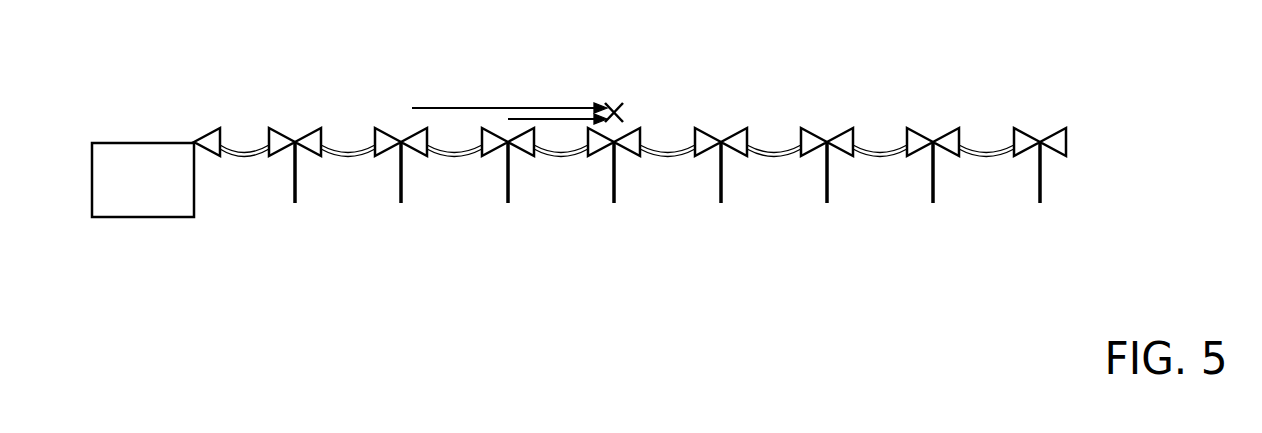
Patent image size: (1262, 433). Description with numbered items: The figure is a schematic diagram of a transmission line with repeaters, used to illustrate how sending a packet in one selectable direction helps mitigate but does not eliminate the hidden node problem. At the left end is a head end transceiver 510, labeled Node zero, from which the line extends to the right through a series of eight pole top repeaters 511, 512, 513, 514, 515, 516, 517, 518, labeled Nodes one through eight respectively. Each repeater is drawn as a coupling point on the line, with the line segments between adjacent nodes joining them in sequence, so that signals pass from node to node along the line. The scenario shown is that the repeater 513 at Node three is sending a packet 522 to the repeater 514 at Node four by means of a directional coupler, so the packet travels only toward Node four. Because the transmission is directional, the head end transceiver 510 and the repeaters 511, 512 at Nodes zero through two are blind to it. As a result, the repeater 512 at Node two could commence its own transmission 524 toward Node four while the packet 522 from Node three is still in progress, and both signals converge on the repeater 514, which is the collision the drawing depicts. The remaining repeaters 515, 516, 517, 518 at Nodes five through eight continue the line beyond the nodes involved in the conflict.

The head end transceiver 510 is at (158, 217).
The pole top repeater 511 is at (297, 160).
The pole top repeater 512 is at (404, 165).
The pole top repeater 513 is at (512, 178).
The pole top repeater 514 is at (617, 160).
The pole top repeater 515 is at (724, 160).
The pole top repeater 516 is at (830, 160).
The pole top repeater 517 is at (935, 170).
The pole top repeater 518 is at (1042, 165).
The packet 522 is at (565, 119).
The transmission 524 is at (463, 108).